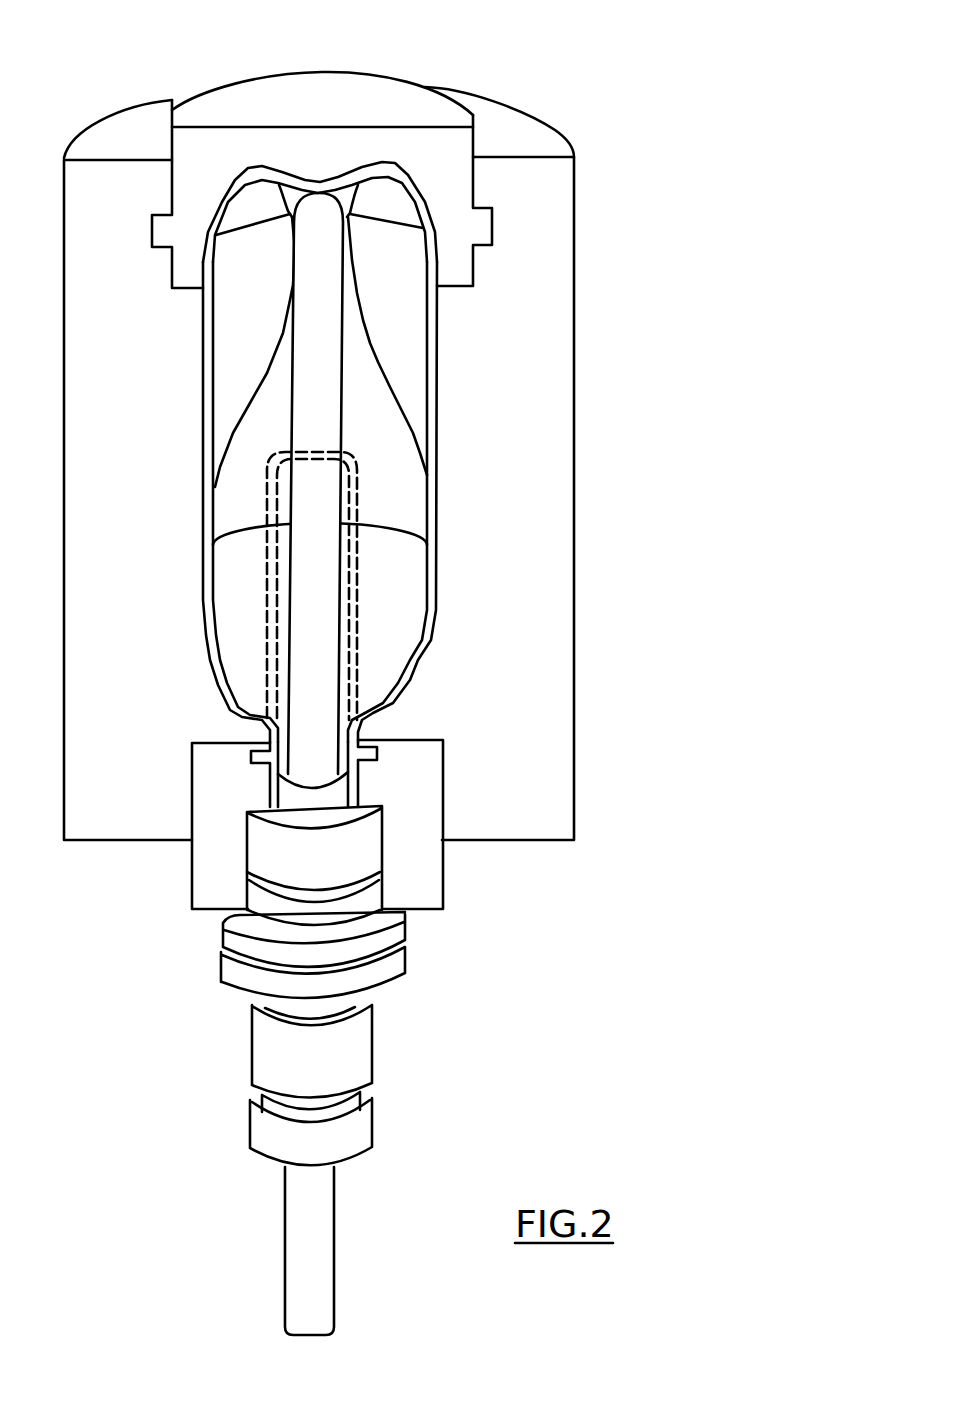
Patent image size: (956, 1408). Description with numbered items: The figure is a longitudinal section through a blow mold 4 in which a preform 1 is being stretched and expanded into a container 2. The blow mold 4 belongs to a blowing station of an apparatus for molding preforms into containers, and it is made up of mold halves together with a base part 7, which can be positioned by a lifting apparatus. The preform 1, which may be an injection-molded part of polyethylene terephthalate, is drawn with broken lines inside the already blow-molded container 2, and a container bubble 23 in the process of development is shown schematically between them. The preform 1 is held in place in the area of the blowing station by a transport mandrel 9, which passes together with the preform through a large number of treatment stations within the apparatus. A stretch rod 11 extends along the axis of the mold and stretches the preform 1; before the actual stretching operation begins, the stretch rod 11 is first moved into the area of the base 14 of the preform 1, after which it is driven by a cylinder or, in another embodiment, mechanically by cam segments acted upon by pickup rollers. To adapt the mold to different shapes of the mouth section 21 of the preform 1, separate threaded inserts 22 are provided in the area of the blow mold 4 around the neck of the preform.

The preform 1 is at (357, 622).
The container 2 is at (436, 393).
The blow mold 4 is at (530, 464).
The base part 7 is at (407, 90).
The transport mandrel 9 is at (393, 979).
The stretch rod 11 is at (283, 1265).
The base 14 is at (357, 458).
The mouth section 21 is at (350, 773).
The threaded inserts 22 is at (423, 865).
The container bubble 23 is at (372, 353).